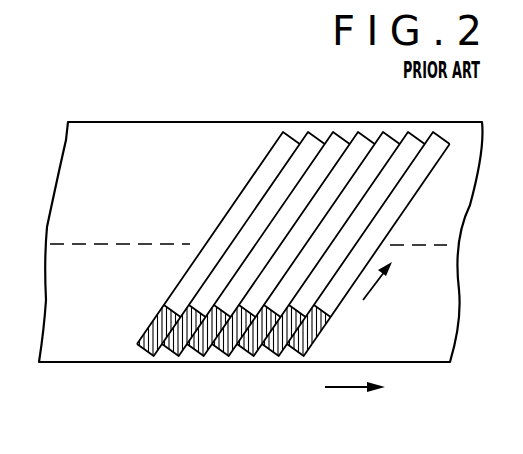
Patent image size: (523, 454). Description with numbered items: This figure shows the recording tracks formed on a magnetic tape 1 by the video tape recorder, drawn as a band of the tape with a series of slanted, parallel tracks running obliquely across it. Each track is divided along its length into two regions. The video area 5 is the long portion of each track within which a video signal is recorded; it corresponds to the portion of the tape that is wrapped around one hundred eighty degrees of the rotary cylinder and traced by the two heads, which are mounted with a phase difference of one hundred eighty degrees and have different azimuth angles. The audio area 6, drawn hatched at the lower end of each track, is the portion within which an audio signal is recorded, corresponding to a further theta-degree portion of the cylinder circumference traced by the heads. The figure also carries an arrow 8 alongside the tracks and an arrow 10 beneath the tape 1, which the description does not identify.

The magnetic tape 1 is at (217, 121).
The video area 5 is at (238, 198).
The audio area 6 is at (145, 335).
The track direction arrow 8 is at (375, 282).
The medium travel direction arrow 10 is at (343, 387).